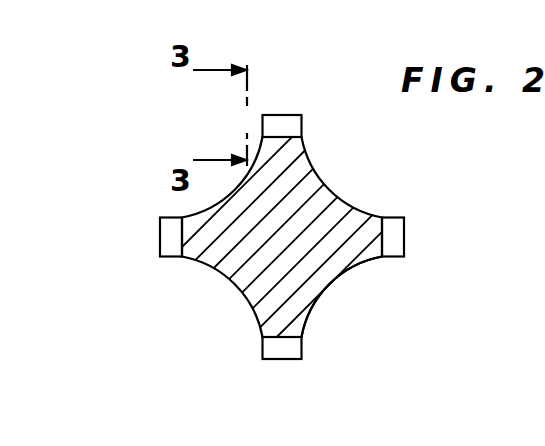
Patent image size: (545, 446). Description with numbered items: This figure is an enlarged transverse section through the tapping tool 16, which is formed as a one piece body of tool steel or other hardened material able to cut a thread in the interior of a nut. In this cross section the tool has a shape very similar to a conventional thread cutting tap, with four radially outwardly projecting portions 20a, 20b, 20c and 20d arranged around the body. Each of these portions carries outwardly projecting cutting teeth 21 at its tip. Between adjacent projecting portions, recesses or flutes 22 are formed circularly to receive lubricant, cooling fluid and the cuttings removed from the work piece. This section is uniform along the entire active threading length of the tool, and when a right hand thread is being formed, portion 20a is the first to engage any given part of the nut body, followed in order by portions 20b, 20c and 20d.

The tapping tool 16 is at (318, 200).
The cutting teeth 21 is at (284, 116).
The radially outwardly projecting portion 20a is at (299, 143).
The radially outwardly projecting portion 20b is at (372, 256).
The radially outwardly projecting portion 20c is at (303, 328).
The radially outwardly projecting portion 20d is at (185, 248).
The recesses or flutes 22 is at (327, 285).